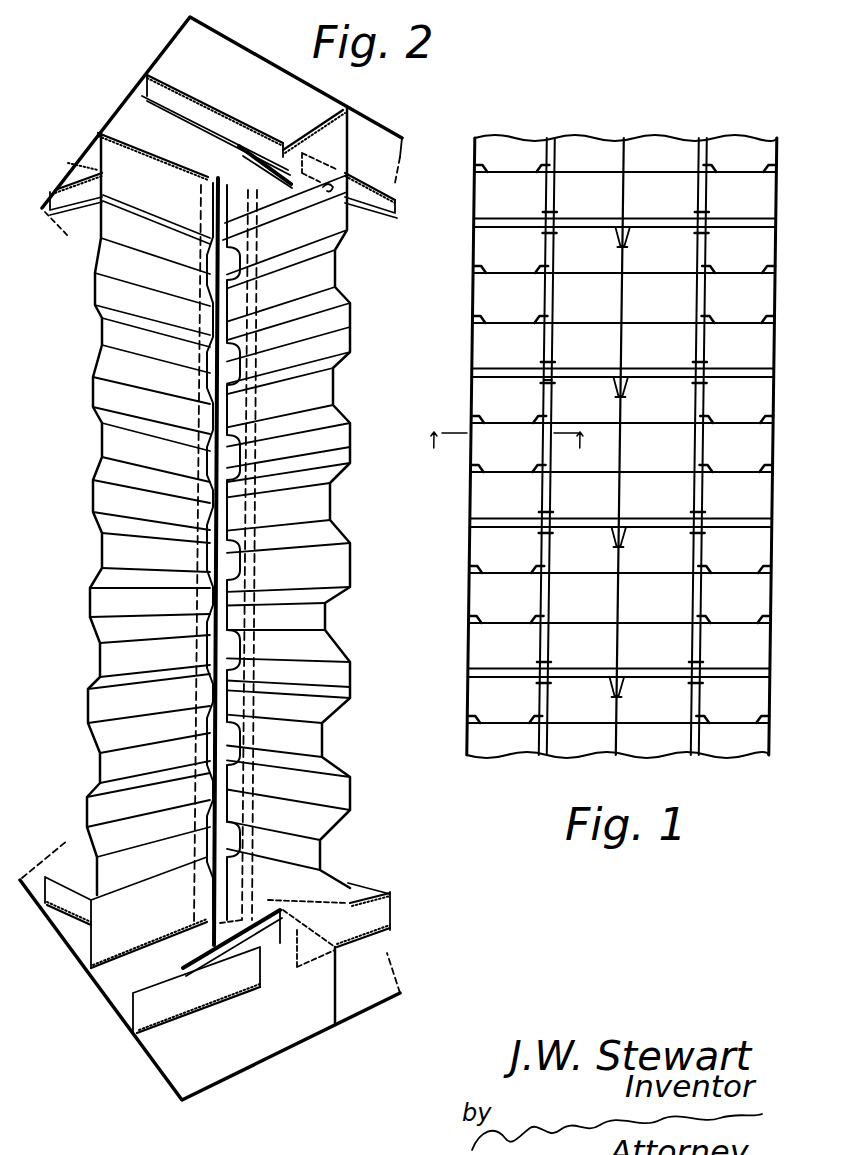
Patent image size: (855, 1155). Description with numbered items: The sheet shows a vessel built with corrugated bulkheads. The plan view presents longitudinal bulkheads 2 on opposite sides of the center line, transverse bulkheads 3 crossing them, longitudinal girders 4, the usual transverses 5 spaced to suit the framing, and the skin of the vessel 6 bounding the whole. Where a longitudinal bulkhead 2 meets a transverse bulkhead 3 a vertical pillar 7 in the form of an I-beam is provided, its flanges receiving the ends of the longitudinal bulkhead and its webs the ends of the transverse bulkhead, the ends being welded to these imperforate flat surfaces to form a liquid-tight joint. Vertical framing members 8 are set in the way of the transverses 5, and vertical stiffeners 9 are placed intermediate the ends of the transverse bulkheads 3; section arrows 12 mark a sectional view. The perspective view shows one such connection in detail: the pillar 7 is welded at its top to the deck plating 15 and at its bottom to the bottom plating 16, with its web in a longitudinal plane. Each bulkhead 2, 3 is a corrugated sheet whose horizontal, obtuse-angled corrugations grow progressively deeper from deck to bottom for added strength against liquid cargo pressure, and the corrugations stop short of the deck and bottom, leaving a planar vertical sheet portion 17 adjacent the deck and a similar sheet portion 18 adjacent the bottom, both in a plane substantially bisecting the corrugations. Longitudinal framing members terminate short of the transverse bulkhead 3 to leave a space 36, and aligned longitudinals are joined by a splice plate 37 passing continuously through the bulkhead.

In FIG. 2, the longitudinal bulkhead 2 is at (97, 328).
In FIG. 1, the longitudinal bulkhead 2 is at (557, 250).
In FIG. 2, the transverse bulkhead 3 is at (352, 322).
In FIG. 1, the transverse bulkhead 3 is at (593, 218).
In FIG. 1, the longitudinal girder 4 is at (627, 297).
In FIG. 1, the transverse 5 is at (595, 277).
In FIG. 1, the skin of the vessel 6 is at (777, 247).
In FIG. 2, the vertical pillar 7 is at (210, 406).
In FIG. 1, the vertical pillar 7 is at (548, 383).
In FIG. 1, the vertical framing member 8 is at (516, 262).
In FIG. 1, the vertical stiffener 9 is at (630, 237).
In FIG. 1, the section line 12 is at (503, 445).
In FIG. 2, the deck plating 15 is at (64, 172).
In FIG. 2, the bottom plating 16 is at (55, 928).
In FIG. 2, the planar vertical sheet portion 17 is at (150, 163).
In FIG. 2, the planar vertical sheet portion 18 is at (98, 938).
In FIG. 2, the space 36 is at (268, 983).
In FIG. 2, the splice plate 37 is at (238, 158).